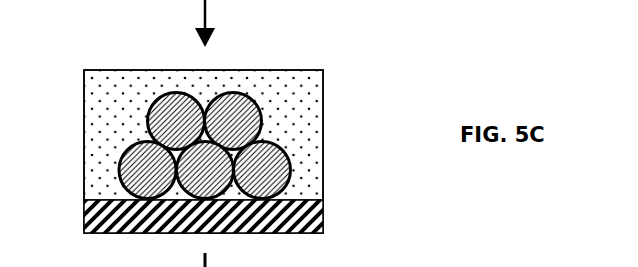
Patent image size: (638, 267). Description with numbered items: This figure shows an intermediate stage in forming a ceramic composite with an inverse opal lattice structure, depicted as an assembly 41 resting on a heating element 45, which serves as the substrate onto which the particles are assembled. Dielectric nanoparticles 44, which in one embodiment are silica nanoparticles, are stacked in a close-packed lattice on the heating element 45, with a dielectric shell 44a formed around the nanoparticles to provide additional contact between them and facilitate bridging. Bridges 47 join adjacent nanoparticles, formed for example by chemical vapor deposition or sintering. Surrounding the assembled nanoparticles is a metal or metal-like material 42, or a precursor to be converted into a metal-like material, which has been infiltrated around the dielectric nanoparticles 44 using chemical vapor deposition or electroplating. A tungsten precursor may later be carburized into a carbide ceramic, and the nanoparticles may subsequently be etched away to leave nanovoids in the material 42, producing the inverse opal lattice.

The particle-loaded composite structure 41 is at (70, 78).
The metal or metal-like material 42 is at (93, 116).
The dielectric nanoparticles 44 is at (228, 106).
The dielectric shell 44a is at (158, 95).
The heating element 45 is at (322, 224).
The bridges 47 is at (263, 130).